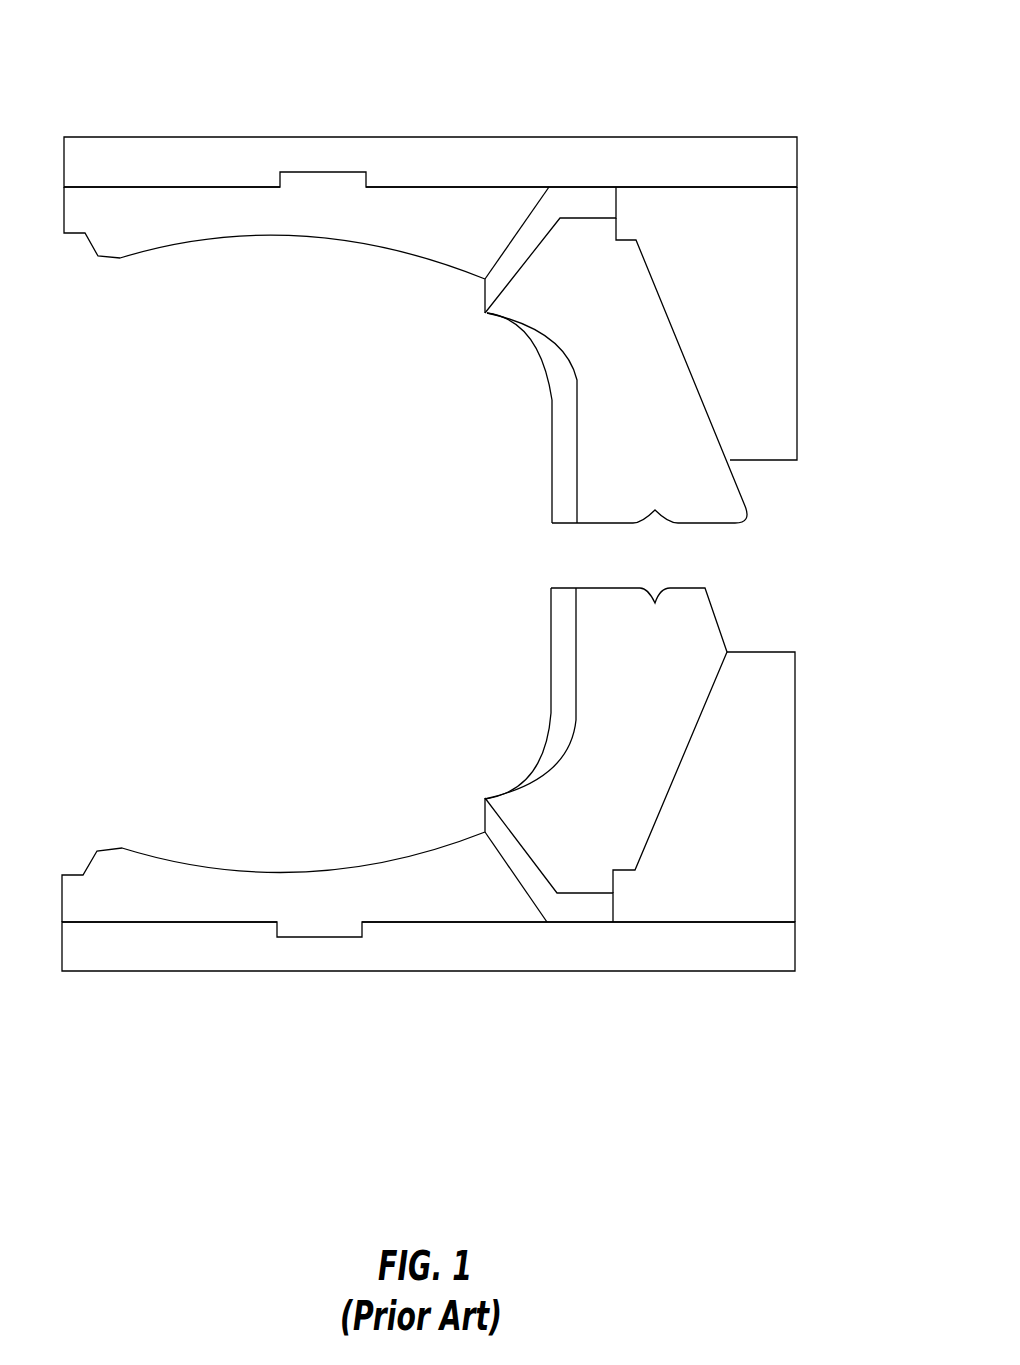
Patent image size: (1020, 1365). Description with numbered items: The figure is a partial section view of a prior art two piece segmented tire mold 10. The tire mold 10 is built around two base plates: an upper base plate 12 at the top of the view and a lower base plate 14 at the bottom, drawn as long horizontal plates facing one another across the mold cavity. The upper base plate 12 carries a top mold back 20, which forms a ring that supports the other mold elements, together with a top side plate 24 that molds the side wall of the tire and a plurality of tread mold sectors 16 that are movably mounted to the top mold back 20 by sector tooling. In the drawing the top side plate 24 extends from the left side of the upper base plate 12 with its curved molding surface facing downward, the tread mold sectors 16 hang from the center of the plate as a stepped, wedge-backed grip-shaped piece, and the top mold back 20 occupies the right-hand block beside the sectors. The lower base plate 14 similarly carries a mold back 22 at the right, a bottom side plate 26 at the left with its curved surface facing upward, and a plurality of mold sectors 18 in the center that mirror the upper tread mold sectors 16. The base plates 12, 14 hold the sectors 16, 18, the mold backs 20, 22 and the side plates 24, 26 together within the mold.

The two piece segmented tire mold 10 is at (183, 55).
The upper base plate 12 is at (727, 157).
The lower base plate 14 is at (722, 957).
The tread mold sectors 16 is at (640, 310).
The mold sectors 18 is at (633, 802).
The top mold back 20 is at (777, 348).
The mold back 22 is at (775, 830).
The top side plate 24 is at (128, 242).
The bottom side plate 26 is at (125, 868).